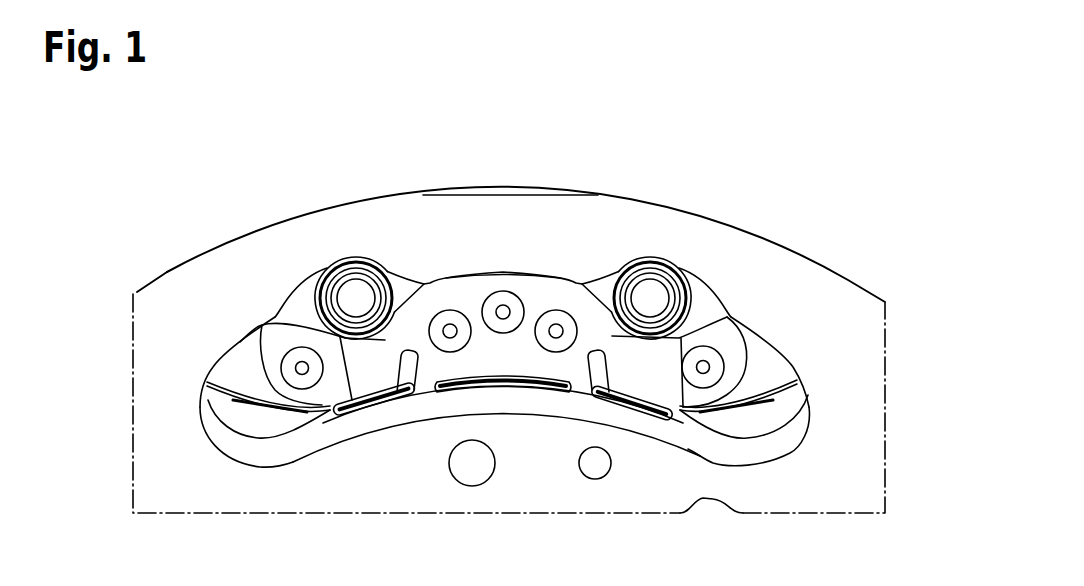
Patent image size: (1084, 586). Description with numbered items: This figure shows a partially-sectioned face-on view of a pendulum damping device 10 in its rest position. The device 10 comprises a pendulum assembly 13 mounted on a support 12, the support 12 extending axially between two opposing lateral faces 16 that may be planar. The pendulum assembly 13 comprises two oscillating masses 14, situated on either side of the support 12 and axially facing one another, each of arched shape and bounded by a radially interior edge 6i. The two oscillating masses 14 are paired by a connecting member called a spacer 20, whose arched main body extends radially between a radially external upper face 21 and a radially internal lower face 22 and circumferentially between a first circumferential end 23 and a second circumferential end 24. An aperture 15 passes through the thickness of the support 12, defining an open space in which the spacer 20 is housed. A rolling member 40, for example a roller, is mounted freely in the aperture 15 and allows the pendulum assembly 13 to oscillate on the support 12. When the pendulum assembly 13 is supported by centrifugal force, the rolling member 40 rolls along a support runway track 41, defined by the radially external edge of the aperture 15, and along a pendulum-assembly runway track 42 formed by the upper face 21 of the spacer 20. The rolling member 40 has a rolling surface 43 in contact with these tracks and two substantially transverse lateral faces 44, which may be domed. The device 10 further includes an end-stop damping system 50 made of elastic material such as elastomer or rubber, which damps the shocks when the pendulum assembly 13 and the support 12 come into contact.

The pendulum damping device 10 is at (782, 210).
The support 12 is at (850, 306).
The pendulum assembly 13 is at (232, 227).
The oscillating mass 14 is at (223, 377).
The aperture 15 is at (235, 444).
The lateral face 16 is at (827, 487).
The spacer 20 is at (647, 380).
The radially external upper face 21 is at (412, 300).
The radially internal lower face 22 is at (378, 336).
The first circumferential end 23 is at (240, 367).
The second circumferential end 24 is at (793, 381).
The rolling member 40 is at (650, 292).
The support runway track 41 is at (378, 258).
The pendulum-assembly runway track 42 is at (303, 409).
The rolling surface 43 is at (608, 285).
The lateral face 44 is at (658, 296).
The end-stop damping system 50 is at (487, 392).
The radially interior edge 6i is at (727, 433).